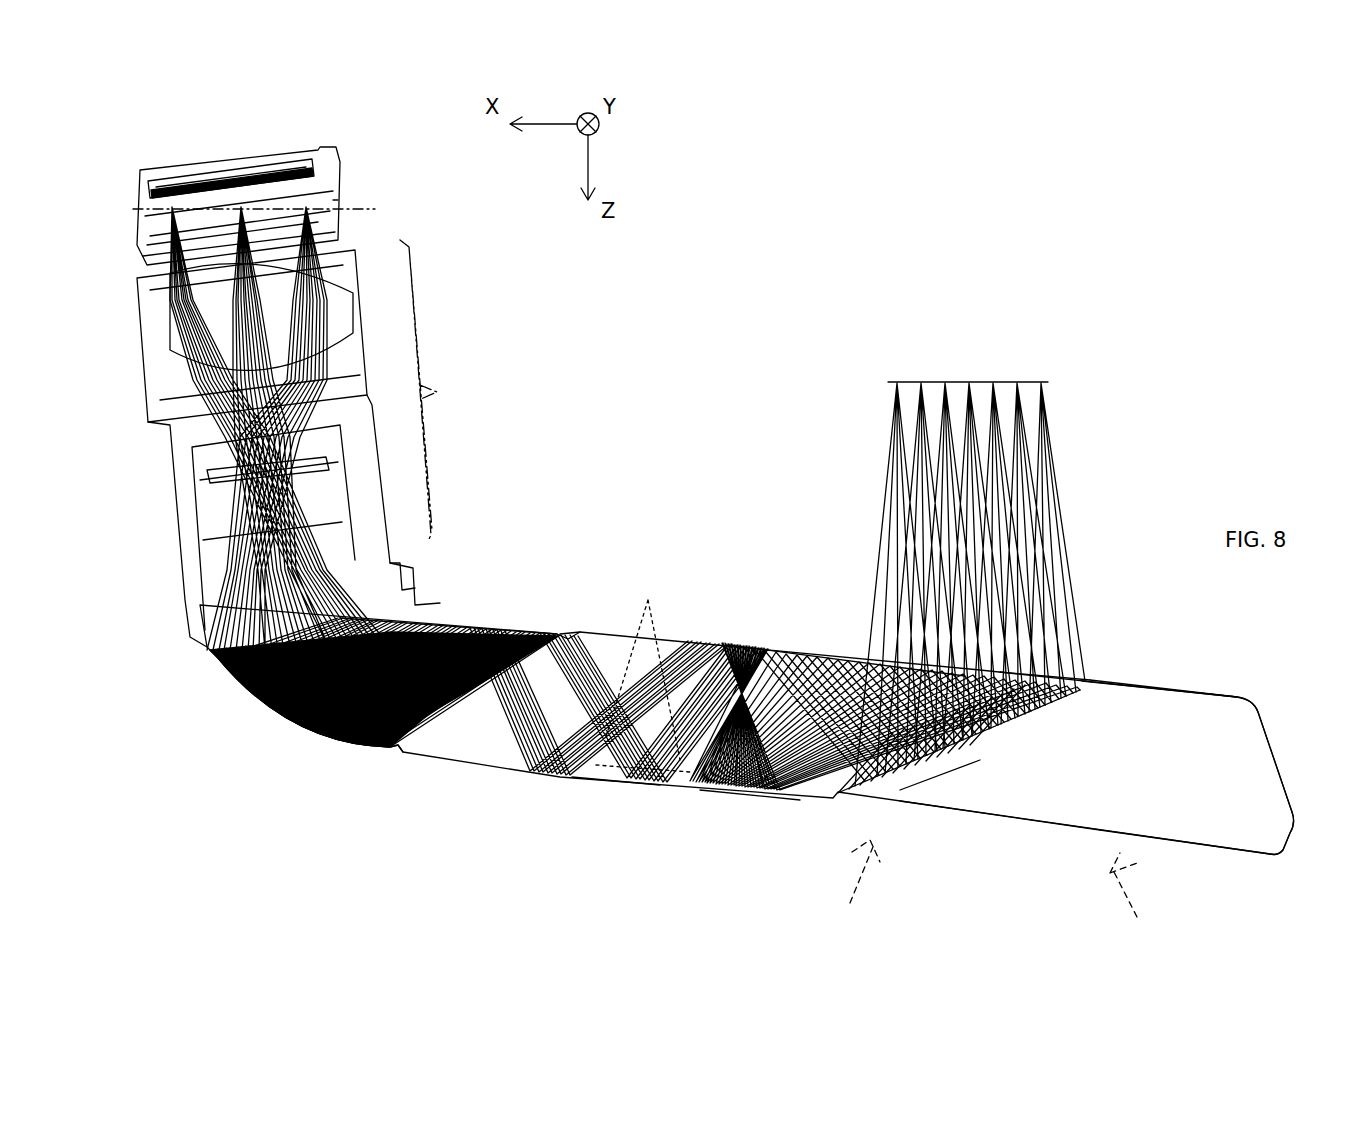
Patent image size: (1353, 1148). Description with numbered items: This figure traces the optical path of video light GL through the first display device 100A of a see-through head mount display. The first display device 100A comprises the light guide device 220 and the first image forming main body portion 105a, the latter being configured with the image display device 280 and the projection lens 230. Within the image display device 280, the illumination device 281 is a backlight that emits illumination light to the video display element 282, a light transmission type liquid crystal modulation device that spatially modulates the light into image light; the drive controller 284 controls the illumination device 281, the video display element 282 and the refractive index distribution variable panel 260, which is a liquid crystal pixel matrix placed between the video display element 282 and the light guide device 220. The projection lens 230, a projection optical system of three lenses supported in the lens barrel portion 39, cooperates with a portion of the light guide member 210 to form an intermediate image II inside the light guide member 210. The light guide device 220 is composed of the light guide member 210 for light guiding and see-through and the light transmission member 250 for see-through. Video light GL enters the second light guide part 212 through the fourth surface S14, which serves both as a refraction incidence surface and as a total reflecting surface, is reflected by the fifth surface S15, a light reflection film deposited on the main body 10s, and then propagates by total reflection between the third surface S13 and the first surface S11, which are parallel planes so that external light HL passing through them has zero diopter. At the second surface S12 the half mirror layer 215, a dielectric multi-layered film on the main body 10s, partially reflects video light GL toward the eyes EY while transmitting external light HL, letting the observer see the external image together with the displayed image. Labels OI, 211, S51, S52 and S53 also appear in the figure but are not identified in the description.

The image display device 280 is at (365, 155).
The illumination device 281 is at (172, 172).
The drive controller 284 is at (273, 157).
The video display element 282 is at (160, 223).
The object image plane OI is at (269, 209).
The refractive index distribution variable panel 260 is at (157, 277).
The lens barrel portion 39 is at (350, 327).
The projection lens 230 is at (314, 443).
The video light GL is at (200, 405).
The eyes EY is at (1005, 380).
The light guide device 220 is at (636, 863).
The light guide member 210 is at (773, 519).
The first display device 100A is at (807, 201).
The first image forming main body portion 105a is at (689, 311).
The fourth surface S14 is at (511, 620).
The fifth surface S15 is at (303, 713).
The second light guide part 212 is at (410, 750).
The third surface S13 is at (612, 778).
The first light guide portion 211 is at (755, 790).
The intermediate image II is at (643, 672).
The main body 10s is at (683, 650).
The first surface S11 is at (810, 655).
The second surface S12 is at (890, 790).
The half mirror layer 215 is at (938, 770).
The second transmission surface S52 is at (1057, 670).
The first transmission surface S51 is at (1150, 690).
The third transmission surface S53 is at (992, 823).
The light transmission member 250 is at (1073, 800).
The external light HL is at (848, 880).